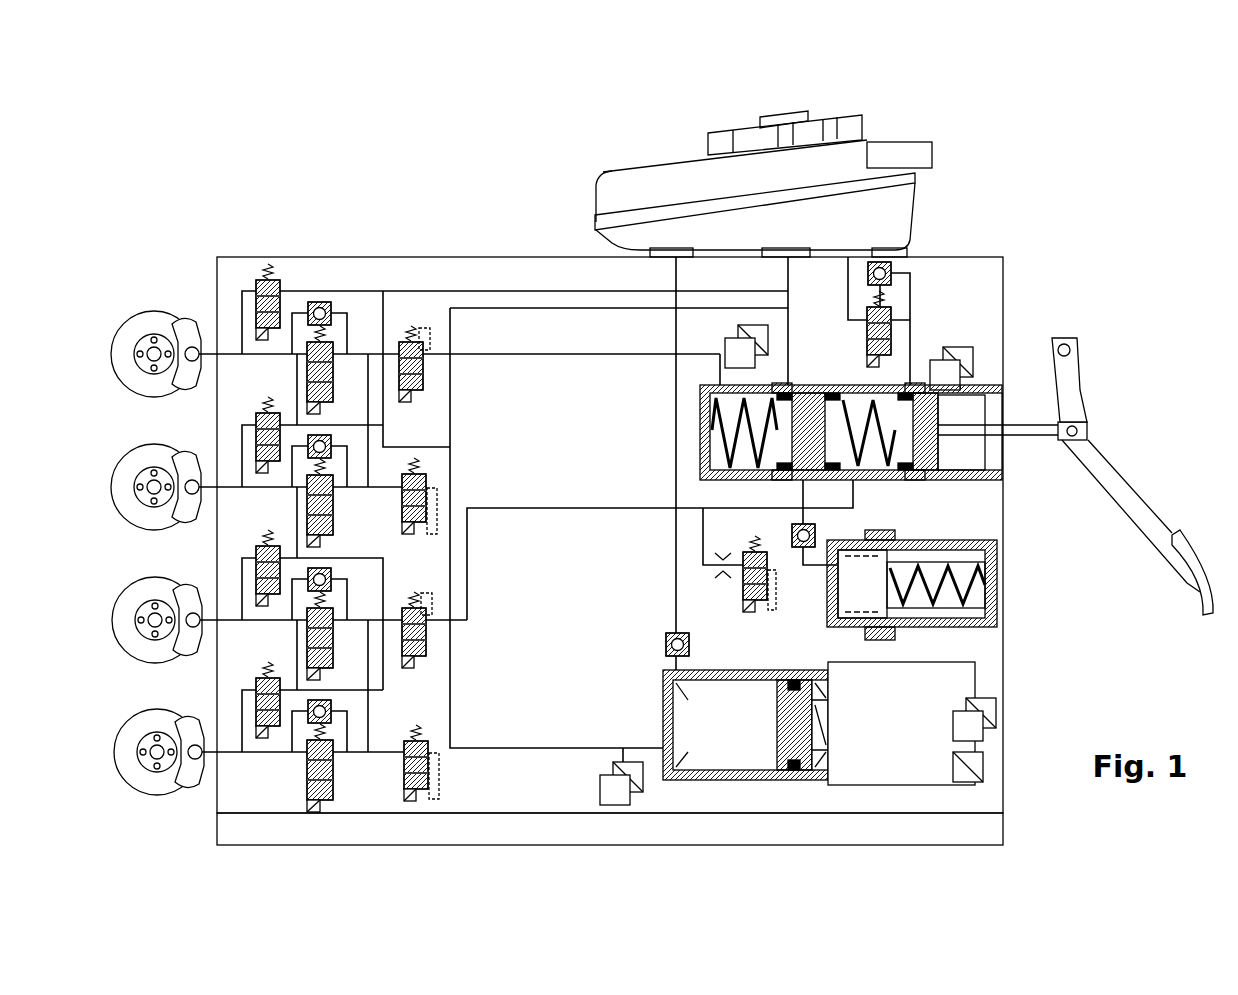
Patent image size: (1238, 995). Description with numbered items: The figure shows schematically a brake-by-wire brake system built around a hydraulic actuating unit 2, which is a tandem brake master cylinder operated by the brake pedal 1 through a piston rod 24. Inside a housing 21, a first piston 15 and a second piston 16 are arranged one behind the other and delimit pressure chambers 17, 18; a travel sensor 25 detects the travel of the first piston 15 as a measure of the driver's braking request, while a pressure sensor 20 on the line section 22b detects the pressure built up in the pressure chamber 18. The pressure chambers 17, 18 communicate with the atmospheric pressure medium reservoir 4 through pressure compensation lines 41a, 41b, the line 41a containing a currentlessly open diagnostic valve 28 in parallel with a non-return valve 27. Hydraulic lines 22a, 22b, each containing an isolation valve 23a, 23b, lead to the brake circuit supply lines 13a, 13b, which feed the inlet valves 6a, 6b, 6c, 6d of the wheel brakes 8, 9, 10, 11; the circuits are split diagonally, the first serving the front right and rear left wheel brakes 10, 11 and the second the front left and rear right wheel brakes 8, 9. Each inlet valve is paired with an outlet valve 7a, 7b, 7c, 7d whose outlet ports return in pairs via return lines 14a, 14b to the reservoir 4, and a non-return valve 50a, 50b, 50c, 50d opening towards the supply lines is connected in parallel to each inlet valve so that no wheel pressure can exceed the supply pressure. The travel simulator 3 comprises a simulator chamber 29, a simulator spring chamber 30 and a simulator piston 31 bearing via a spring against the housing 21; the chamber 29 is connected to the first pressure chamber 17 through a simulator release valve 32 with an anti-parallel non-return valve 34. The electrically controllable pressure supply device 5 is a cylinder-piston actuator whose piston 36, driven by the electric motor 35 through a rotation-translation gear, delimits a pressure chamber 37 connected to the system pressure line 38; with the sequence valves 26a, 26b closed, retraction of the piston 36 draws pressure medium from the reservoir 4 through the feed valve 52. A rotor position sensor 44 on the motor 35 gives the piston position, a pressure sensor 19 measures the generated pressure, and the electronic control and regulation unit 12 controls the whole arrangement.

The brake pedal 1 is at (1108, 432).
The hydraulic actuating unit 2 is at (835, 423).
The travel simulator 3 is at (886, 575).
The pressure medium reservoir 4 is at (608, 186).
The electrically controllable pressure supply device 5 is at (867, 712).
The inlet valve 6a is at (333, 380).
The inlet valve 6b is at (333, 515).
The inlet valve 6c is at (335, 645).
The inlet valve 6d is at (338, 775).
The outlet valve 7a is at (258, 282).
The outlet valve 7b is at (258, 418).
The outlet valve 7c is at (260, 548).
The outlet valve 7d is at (262, 680).
The wheel brake 8 is at (192, 330).
The wheel brake 9 is at (192, 463).
The wheel brake 10 is at (193, 596).
The wheel brake 11 is at (195, 728).
The electronic control and regulation unit 12 is at (985, 828).
The brake circuit supply line 13a is at (370, 710).
The brake circuit supply line 13b is at (370, 430).
The return line 14a is at (533, 309).
The return line 14b is at (500, 291).
The first piston 15 is at (990, 485).
The second piston 16 is at (812, 408).
The pressure chamber 17 is at (860, 410).
The pressure chamber 18 is at (745, 470).
The pressure sensor 19 is at (612, 770).
The pressure sensor 20 is at (745, 326).
The housing 21 is at (987, 262).
The hydraulic line 22a is at (558, 512).
The hydraulic line 22b is at (553, 358).
The isolation valve 23a is at (427, 636).
The isolation valve 23b is at (423, 368).
The piston rod 24 is at (1030, 423).
The travel sensor 25 is at (975, 352).
The sequence valve 26a is at (427, 748).
The sequence valve 26b is at (425, 482).
The non-return valve 27 is at (892, 273).
The diagnostic valve 28 is at (867, 325).
The simulator chamber 29 is at (827, 612).
The simulator spring chamber 30 is at (940, 565).
The simulator piston 31 is at (862, 600).
The simulator release valve 32 is at (770, 575).
The non-return valve 34 is at (792, 535).
The electric motor 35 is at (950, 680).
The piston 36 is at (778, 768).
The pressure chamber 37 is at (730, 700).
The system pressure line 38 is at (455, 683).
The pressure compensation line 41a is at (912, 345).
The pressure compensation line 41b is at (785, 272).
The sensor 44 is at (995, 712).
The non-return valve 50a is at (318, 300).
The non-return valve 50b is at (318, 434).
The non-return valve 50c is at (318, 566).
The non-return valve 50d is at (320, 698).
The feed valve 52 is at (666, 645).